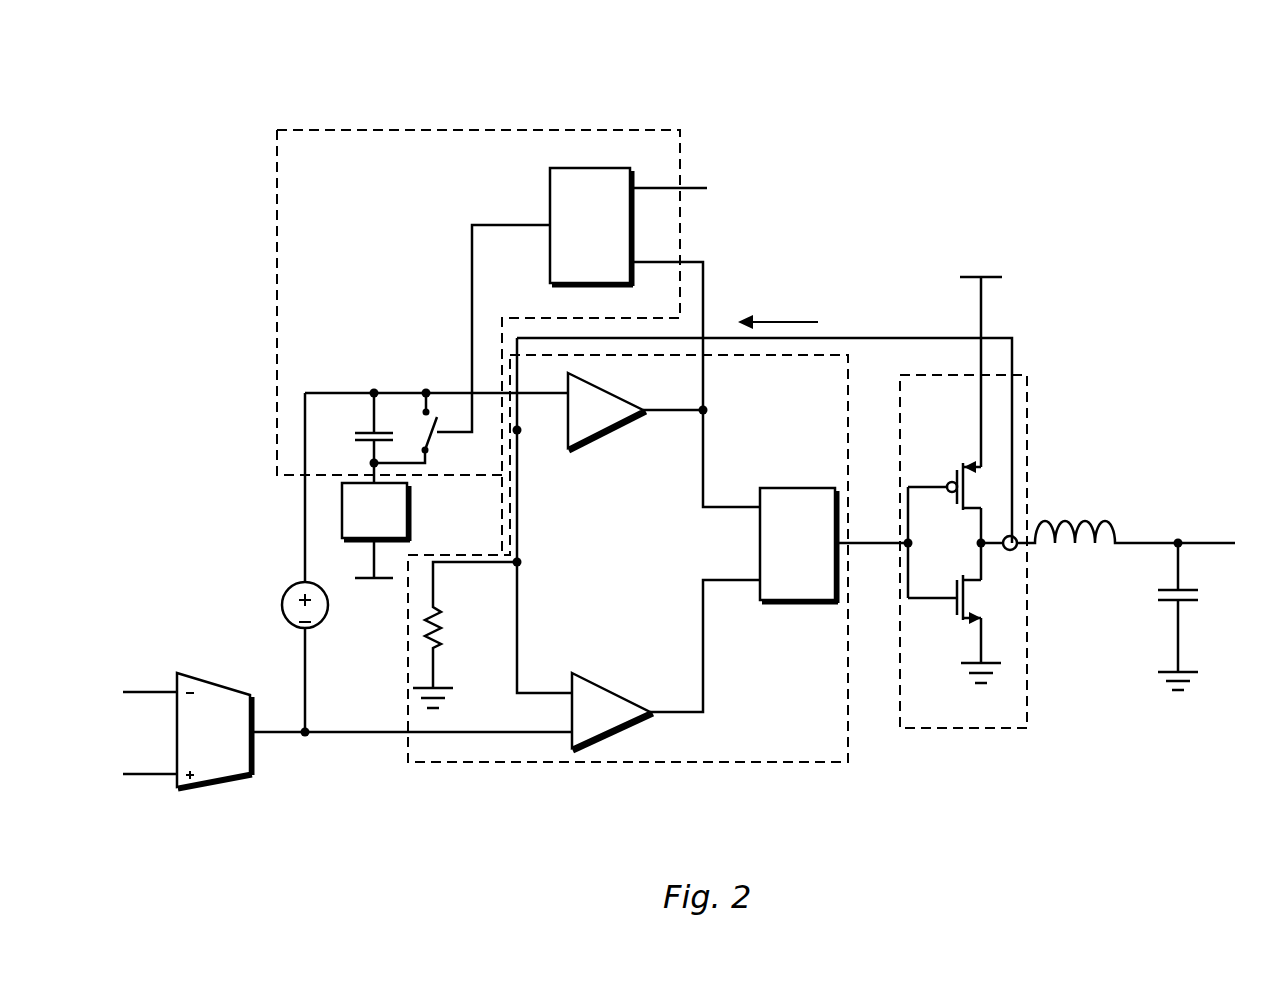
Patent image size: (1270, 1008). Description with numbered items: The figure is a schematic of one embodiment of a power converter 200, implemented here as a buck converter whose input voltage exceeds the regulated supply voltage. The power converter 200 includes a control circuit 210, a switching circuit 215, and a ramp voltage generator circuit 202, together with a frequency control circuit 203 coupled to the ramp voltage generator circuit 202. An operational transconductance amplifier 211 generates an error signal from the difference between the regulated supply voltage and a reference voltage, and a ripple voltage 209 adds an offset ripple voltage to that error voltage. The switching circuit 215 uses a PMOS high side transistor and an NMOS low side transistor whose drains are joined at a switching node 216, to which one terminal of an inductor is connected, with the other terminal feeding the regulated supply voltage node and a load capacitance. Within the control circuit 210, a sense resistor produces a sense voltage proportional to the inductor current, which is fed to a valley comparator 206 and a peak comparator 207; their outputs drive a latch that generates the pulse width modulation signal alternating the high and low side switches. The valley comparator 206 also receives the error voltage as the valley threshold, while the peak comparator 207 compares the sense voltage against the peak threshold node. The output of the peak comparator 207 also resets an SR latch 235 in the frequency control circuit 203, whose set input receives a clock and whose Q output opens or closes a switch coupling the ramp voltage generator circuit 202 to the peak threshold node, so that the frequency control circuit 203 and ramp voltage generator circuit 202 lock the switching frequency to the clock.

The power converter 200 is at (690, 36).
The frequency control circuit 203 is at (752, 117).
The SR latch 235 is at (575, 246).
The ramp voltage generator circuit 202 is at (360, 533).
The ripple voltage 209 is at (272, 621).
The control circuit 210 is at (707, 799).
The peak comparator 207 is at (624, 433).
The valley comparator 206 is at (638, 703).
The operational transconductance amplifier 211 is at (199, 750).
The switching circuit 215 is at (1180, 761).
The switching node 216 is at (978, 545).